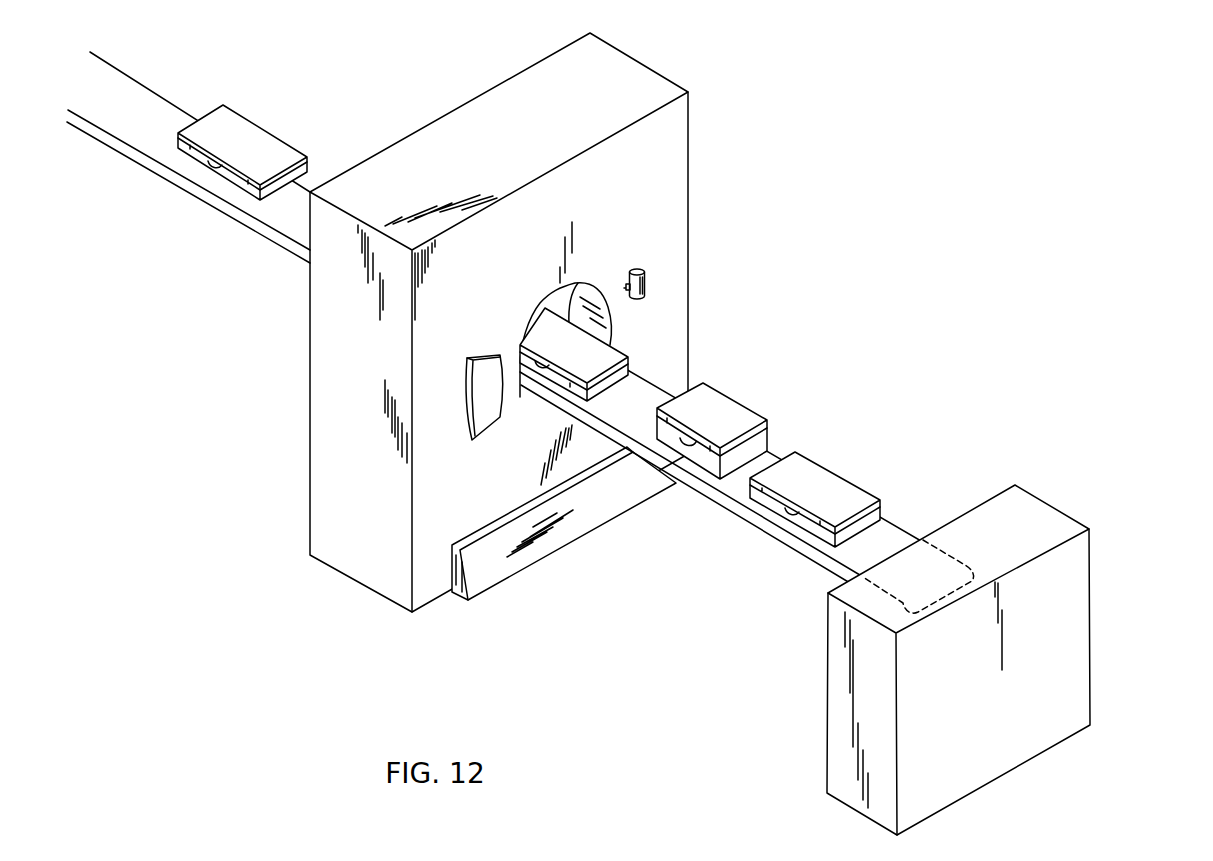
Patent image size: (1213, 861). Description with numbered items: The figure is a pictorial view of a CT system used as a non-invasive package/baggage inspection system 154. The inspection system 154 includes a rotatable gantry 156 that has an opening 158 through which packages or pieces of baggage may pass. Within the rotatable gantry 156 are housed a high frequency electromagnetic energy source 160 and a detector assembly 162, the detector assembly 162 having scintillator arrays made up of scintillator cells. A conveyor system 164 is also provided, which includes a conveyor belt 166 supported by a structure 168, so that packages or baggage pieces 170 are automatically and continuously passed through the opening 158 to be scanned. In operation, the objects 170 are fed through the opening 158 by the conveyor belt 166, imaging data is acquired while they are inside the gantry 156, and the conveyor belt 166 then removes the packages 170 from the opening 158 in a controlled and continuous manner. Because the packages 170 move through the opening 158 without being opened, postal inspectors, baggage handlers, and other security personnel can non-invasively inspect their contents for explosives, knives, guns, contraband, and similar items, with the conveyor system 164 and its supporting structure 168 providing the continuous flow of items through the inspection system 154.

The package/baggage inspection system 154 is at (819, 345).
The rotatable gantry 156 is at (642, 187).
The opening 158 is at (582, 288).
The high frequency electromagnetic energy source 160 is at (647, 273).
The detector assembly 162 is at (483, 372).
The conveyor system 164 is at (95, 179).
The conveyor belt 166 is at (287, 213).
The structure 168 is at (1089, 596).
The packages or baggage pieces 170 is at (247, 145).